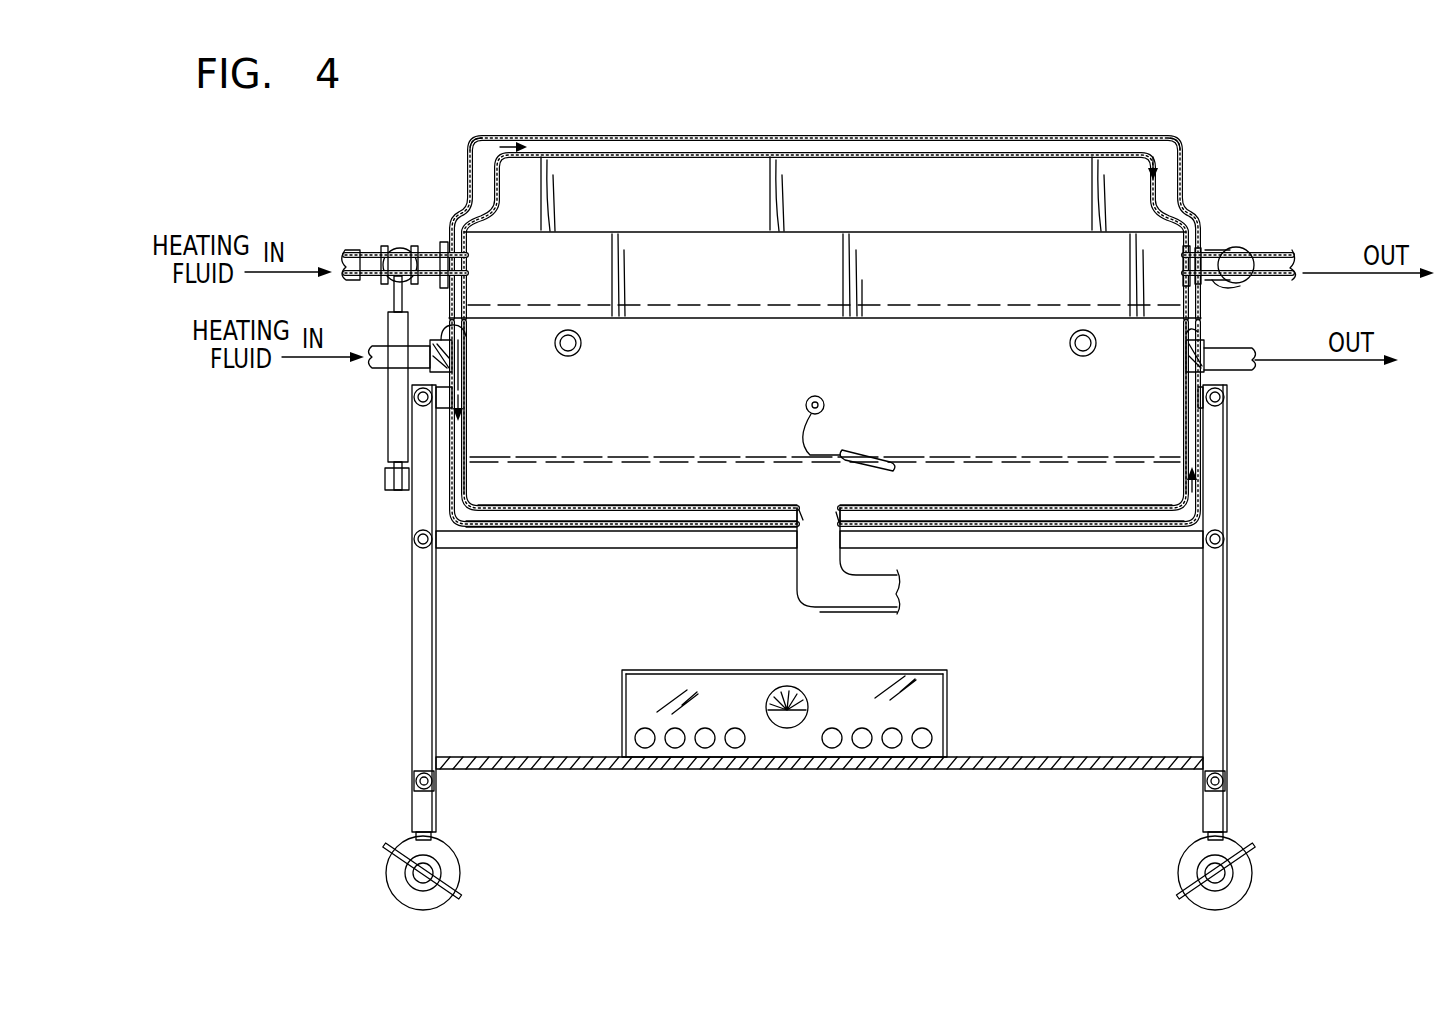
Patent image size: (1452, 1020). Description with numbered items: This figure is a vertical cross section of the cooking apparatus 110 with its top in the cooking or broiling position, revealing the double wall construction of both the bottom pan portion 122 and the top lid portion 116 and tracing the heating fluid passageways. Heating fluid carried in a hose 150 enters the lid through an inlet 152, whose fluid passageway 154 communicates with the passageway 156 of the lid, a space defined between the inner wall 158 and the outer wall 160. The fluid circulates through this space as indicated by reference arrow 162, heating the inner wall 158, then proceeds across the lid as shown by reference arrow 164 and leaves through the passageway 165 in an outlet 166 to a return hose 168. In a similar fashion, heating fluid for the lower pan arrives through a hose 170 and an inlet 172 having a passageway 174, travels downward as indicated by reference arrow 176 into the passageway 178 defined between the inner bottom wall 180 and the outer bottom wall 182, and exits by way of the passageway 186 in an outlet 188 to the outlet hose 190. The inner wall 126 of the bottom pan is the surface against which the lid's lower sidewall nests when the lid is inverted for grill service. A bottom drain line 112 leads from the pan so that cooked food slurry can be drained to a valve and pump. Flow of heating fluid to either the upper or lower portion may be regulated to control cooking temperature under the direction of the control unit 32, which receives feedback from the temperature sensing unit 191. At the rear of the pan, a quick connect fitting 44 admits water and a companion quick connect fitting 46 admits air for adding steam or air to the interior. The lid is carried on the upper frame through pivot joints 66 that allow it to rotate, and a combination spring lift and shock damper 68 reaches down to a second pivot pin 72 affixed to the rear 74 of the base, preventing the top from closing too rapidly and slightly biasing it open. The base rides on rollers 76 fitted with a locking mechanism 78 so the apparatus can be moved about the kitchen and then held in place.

The cooking apparatus 110 is at (631, 101).
The reference arrow 162 is at (472, 134).
The bottom pan portion 122 is at (462, 162).
The fluid passageway 154 is at (443, 241).
The inlet 152 is at (420, 247).
The hose 150 is at (348, 254).
The pivot joint 66 is at (397, 248).
The passageway 156 is at (846, 146).
The outer wall 160 is at (867, 136).
The inner wall 158 is at (897, 160).
The reference arrow 164 is at (1157, 143).
The outlet 166 is at (1213, 252).
The hose 168 is at (1288, 252).
The passageway 165 is at (1215, 284).
The top lid portion 116 is at (975, 286).
The inlet 172 is at (478, 333).
The quick connect fitting 44 is at (577, 357).
The reference arrow 176 is at (468, 378).
The inner wall 126 is at (468, 423).
The hose 170 is at (383, 373).
The passageway 174 is at (413, 374).
The spring lift/shock damper 68 is at (393, 450).
The second pivot pin 72 is at (385, 484).
The quick connect fitting 46 is at (1075, 356).
The passageway 186 is at (1190, 353).
The outlet 188 is at (1200, 345).
The outlet hose 190 is at (1240, 368).
The temperature sensing unit 191 is at (857, 448).
The passageway 178 is at (662, 514).
The inner bottom wall 180 is at (710, 507).
The outer bottom wall 182 is at (693, 528).
The bottom drain line 112 is at (802, 606).
The control unit 32 is at (928, 668).
The rear of base 74 is at (1214, 608).
The rollers 76 is at (384, 845).
The locking mechanism 78 is at (393, 880).